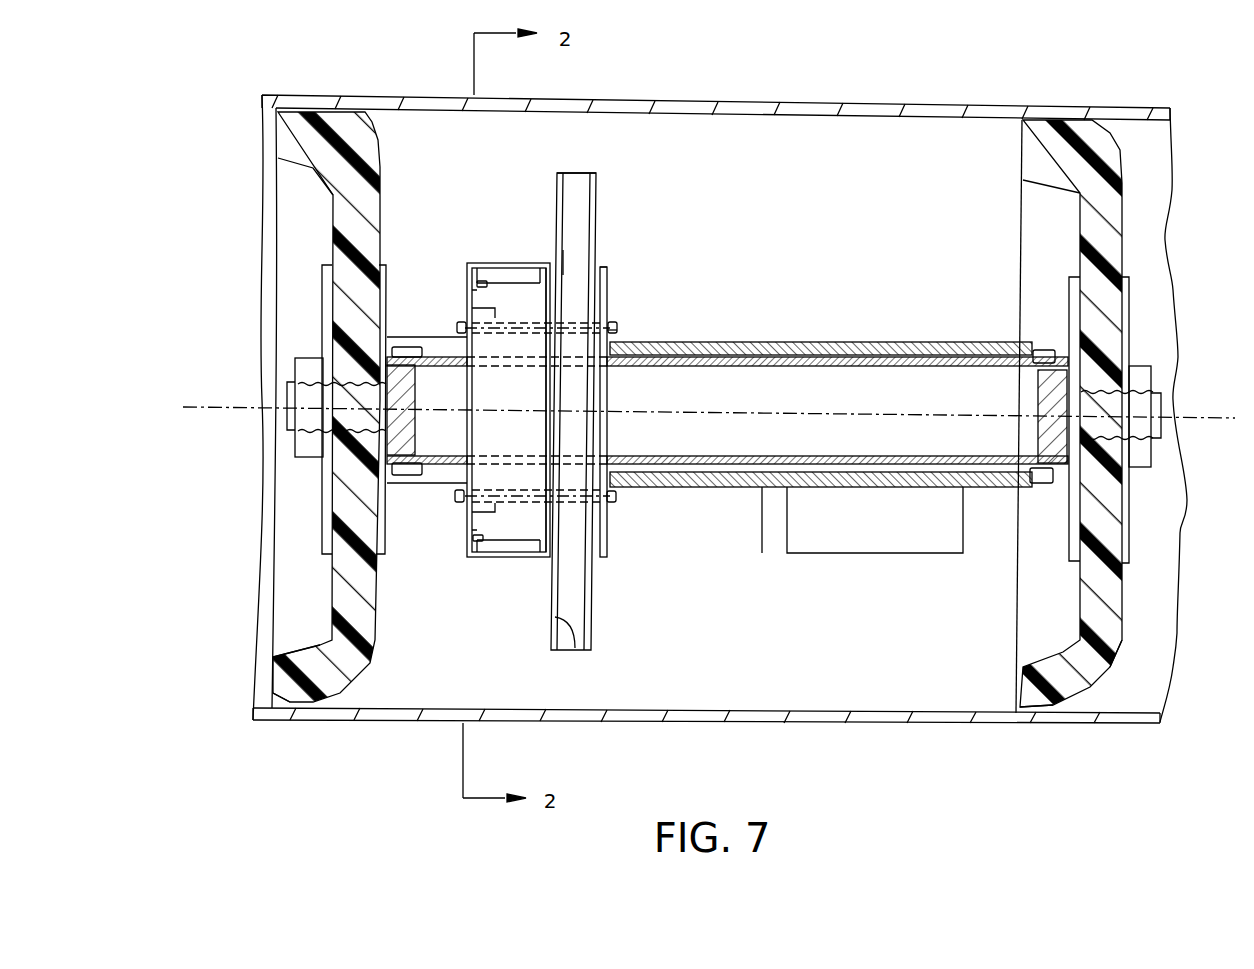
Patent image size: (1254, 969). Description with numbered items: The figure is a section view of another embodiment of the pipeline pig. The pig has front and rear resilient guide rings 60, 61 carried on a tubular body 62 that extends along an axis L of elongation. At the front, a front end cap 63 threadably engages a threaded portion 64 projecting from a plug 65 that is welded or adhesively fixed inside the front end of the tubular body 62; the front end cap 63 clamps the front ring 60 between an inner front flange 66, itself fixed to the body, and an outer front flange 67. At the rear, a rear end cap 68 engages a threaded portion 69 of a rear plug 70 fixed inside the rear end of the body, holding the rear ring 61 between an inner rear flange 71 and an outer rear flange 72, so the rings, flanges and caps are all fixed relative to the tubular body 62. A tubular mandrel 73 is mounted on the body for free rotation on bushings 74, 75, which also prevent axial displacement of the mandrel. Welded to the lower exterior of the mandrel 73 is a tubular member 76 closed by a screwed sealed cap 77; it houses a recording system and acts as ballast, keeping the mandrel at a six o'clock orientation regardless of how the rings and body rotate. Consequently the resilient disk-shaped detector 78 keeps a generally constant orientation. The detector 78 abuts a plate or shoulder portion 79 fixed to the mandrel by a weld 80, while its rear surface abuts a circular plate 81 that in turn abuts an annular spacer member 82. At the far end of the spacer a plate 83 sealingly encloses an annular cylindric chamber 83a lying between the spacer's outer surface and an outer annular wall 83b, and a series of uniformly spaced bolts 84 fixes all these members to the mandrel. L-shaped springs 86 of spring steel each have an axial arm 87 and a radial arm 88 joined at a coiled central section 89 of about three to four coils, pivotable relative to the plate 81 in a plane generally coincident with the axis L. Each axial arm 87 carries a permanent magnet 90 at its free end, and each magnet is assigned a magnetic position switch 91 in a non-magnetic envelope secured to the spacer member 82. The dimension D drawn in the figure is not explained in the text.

The front resilient guide ring 60 is at (1062, 171).
The rear resilient guide ring 61 is at (340, 200).
The tubular body 62 is at (896, 386).
The front end cap 63 is at (1137, 467).
The threaded portion 64 is at (1152, 403).
The plug 65 is at (1040, 427).
The inner front flange 66 is at (1068, 290).
The outer front flange 67 is at (1127, 531).
The rear end cap 68 is at (308, 446).
The threaded portion 69 is at (330, 345).
The rear plug 70 is at (408, 402).
The inner rear flange 71 is at (392, 300).
The outer rear flange 72 is at (322, 522).
The tubular mandrel 73 is at (820, 342).
The bushing 74 is at (1046, 344).
The bushing 75 is at (404, 346).
The tubular member 76 is at (878, 553).
The screwed sealed cap 77 is at (770, 557).
The disk-shaped detector 78 is at (612, 183).
The plate or shoulder portion 79 is at (613, 312).
The weld 80 is at (617, 335).
The circular plate 81 is at (540, 413).
The annular spacer member 82 is at (532, 332).
The plate 83 is at (466, 316).
The annular cylindric chamber 83a is at (505, 262).
The outer annular wall 83b is at (535, 262).
The bolts 84 is at (461, 322).
The L-shaped spring 86 is at (574, 263).
The axial arm 87 is at (537, 286).
The radial arm 88 is at (563, 210).
The coiled central section 89 is at (610, 290).
The permanent magnet 90 is at (484, 282).
The magnetic position switch 91 is at (478, 286).
The axis of elongation L is at (218, 405).
The diameter D is at (490, 608).